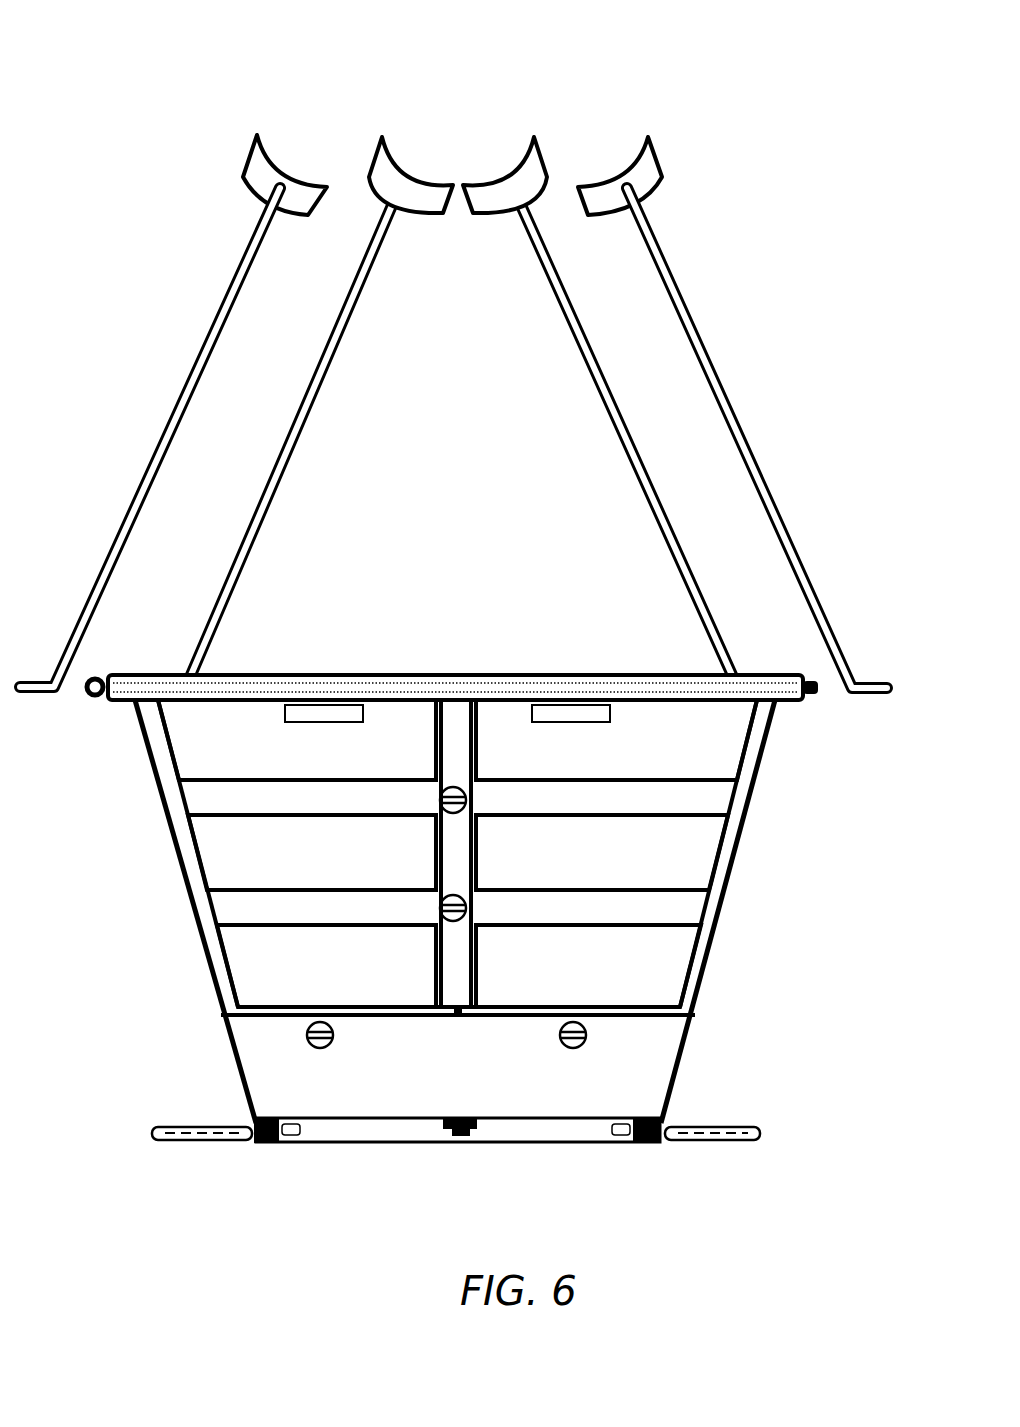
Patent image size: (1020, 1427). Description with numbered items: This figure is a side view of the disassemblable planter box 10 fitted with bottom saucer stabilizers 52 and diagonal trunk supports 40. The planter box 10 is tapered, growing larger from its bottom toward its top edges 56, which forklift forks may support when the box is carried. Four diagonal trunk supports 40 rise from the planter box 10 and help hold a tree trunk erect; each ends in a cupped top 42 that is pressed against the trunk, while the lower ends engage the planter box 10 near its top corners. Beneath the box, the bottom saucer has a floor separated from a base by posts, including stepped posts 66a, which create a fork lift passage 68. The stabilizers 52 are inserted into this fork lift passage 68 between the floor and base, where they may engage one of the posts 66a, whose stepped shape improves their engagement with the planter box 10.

The planter box 10 is at (805, 915).
The diagonal trunk support 40 is at (247, 283).
The cupped top 42 is at (262, 172).
The stabilizer 52 is at (231, 1135).
The top edge 56 is at (790, 703).
The post 66a is at (272, 1140).
The fork lift passage 68 is at (350, 1128).